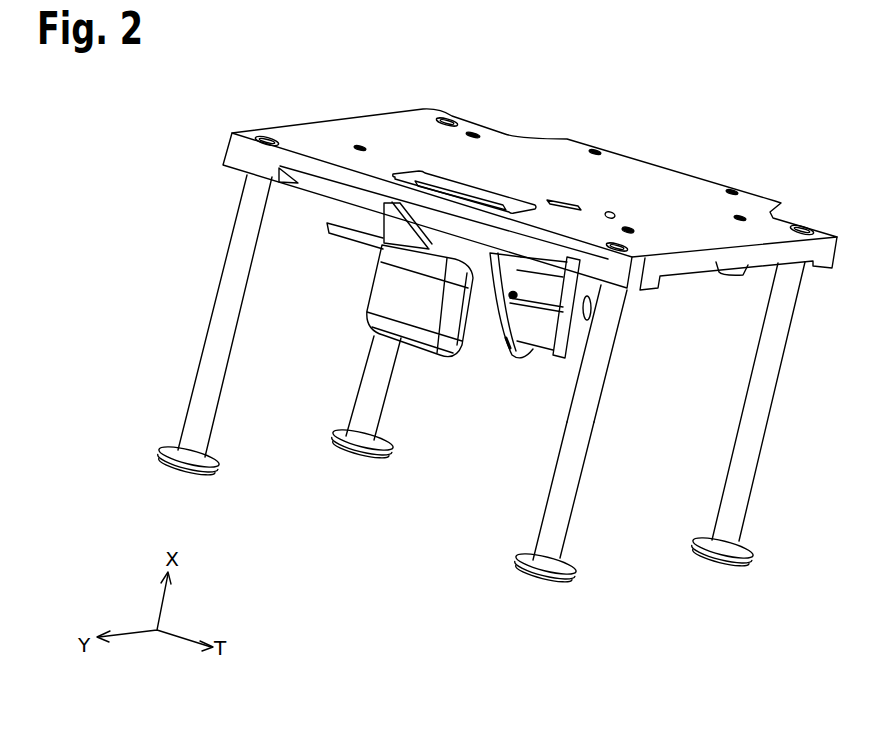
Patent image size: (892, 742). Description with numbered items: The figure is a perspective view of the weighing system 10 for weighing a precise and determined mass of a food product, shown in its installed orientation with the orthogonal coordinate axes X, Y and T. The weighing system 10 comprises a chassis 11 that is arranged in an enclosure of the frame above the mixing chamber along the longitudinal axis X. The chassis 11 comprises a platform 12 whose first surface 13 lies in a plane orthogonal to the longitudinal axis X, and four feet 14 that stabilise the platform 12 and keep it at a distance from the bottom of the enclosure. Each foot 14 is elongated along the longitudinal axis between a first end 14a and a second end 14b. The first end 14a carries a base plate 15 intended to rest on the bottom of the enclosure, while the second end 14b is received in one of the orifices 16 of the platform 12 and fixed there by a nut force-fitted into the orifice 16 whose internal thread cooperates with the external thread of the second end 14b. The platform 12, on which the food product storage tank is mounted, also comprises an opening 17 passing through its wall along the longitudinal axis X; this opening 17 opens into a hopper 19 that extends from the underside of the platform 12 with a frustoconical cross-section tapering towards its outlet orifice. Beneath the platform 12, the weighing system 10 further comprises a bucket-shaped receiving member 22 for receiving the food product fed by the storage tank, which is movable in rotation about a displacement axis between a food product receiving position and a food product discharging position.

The weighing system 10 is at (633, 117).
The chassis 11 is at (682, 148).
The platform 12 is at (711, 205).
The first surface 13 is at (526, 150).
The feet 14 is at (565, 478).
The first end 14a is at (552, 557).
The second end 14b is at (606, 318).
The base plate 15 is at (527, 571).
The orifices 16 is at (273, 141).
The opening 17 is at (433, 187).
The hopper 19 is at (387, 223).
The receiving member 22 is at (340, 333).